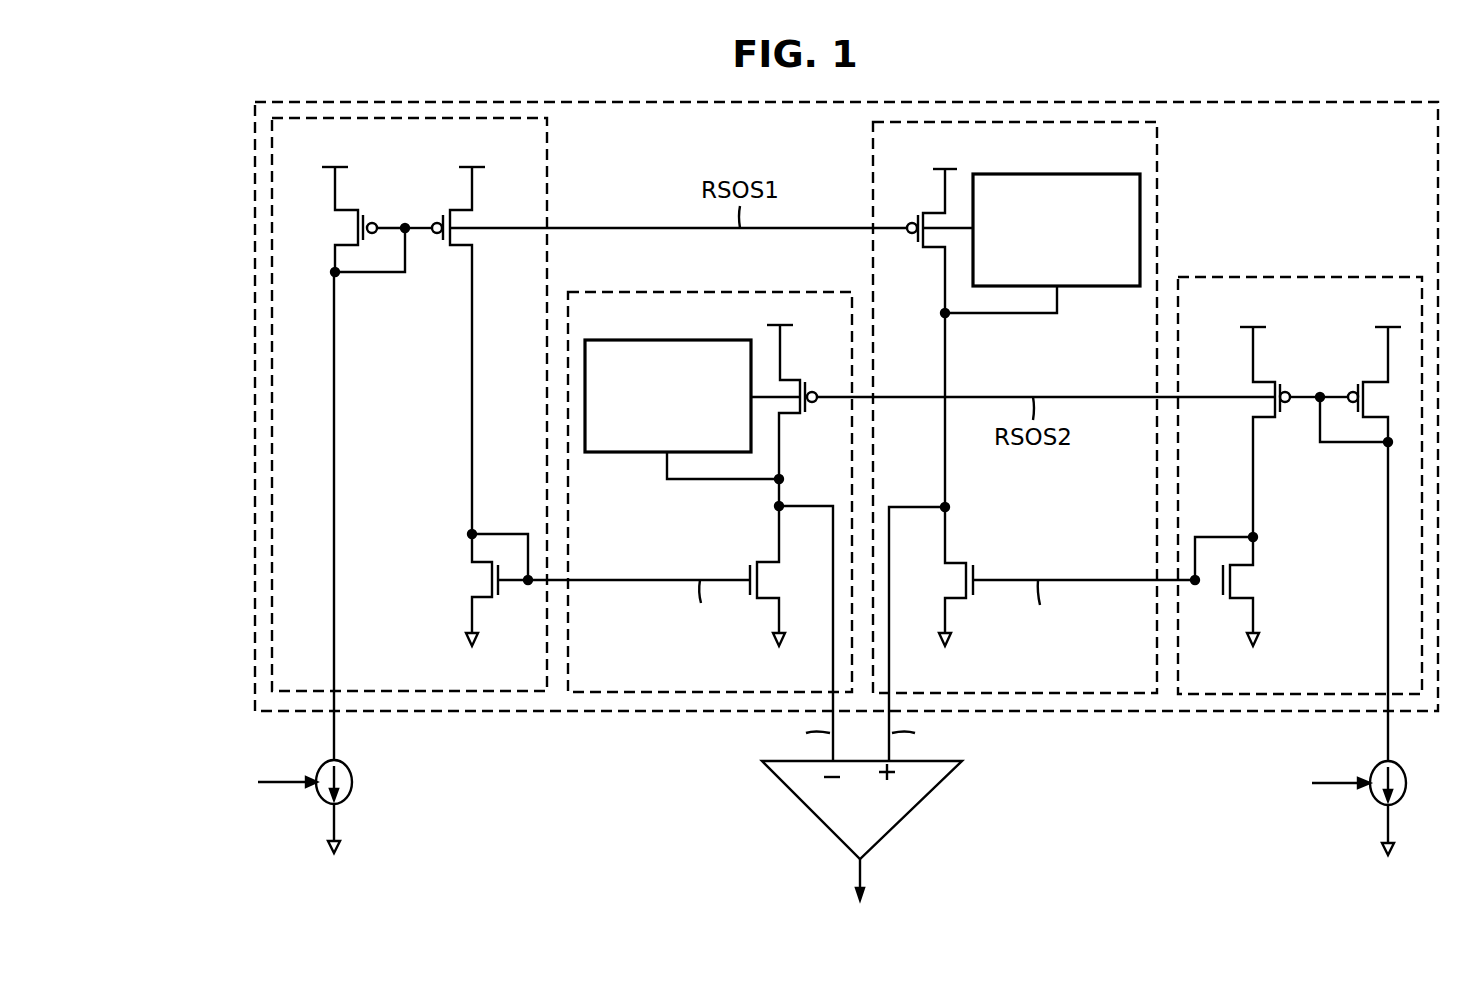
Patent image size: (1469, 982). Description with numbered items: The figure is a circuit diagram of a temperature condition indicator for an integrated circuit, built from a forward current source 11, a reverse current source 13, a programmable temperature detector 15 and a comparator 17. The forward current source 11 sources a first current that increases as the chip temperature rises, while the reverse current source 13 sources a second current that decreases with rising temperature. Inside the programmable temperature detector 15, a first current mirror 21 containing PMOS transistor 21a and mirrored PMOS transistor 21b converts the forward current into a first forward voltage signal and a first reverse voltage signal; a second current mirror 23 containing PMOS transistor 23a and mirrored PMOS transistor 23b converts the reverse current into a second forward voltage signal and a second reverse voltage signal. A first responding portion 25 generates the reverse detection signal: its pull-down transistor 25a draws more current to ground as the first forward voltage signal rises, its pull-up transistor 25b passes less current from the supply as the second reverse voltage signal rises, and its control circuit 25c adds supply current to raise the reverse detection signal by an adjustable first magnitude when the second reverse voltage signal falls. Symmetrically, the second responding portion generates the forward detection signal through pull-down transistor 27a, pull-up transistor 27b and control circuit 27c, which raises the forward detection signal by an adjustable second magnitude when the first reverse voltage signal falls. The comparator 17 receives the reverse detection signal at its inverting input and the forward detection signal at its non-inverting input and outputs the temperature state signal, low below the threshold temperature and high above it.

The forward current source 11 is at (352, 782).
The reverse current source 13 is at (1406, 783).
The programmable temperature detector 15 is at (1126, 712).
The comparator 17 is at (925, 798).
The first current mirror 21 is at (547, 145).
The PMOS transistor 21a is at (340, 226).
The PMOS transistor 21b is at (473, 222).
The second current mirror 23 is at (1310, 276).
The PMOS transistor 23a is at (1373, 380).
The PMOS transistor 23b is at (1272, 380).
The first responding portion 25 is at (697, 291).
The pull-down transistor 25a is at (760, 561).
The pull-up transistor 25b is at (794, 380).
The control circuit 25c is at (631, 452).
The pull-down transistor 27a is at (962, 562).
The pull-up transistor 27b is at (933, 248).
The control circuit 27c is at (1083, 286).